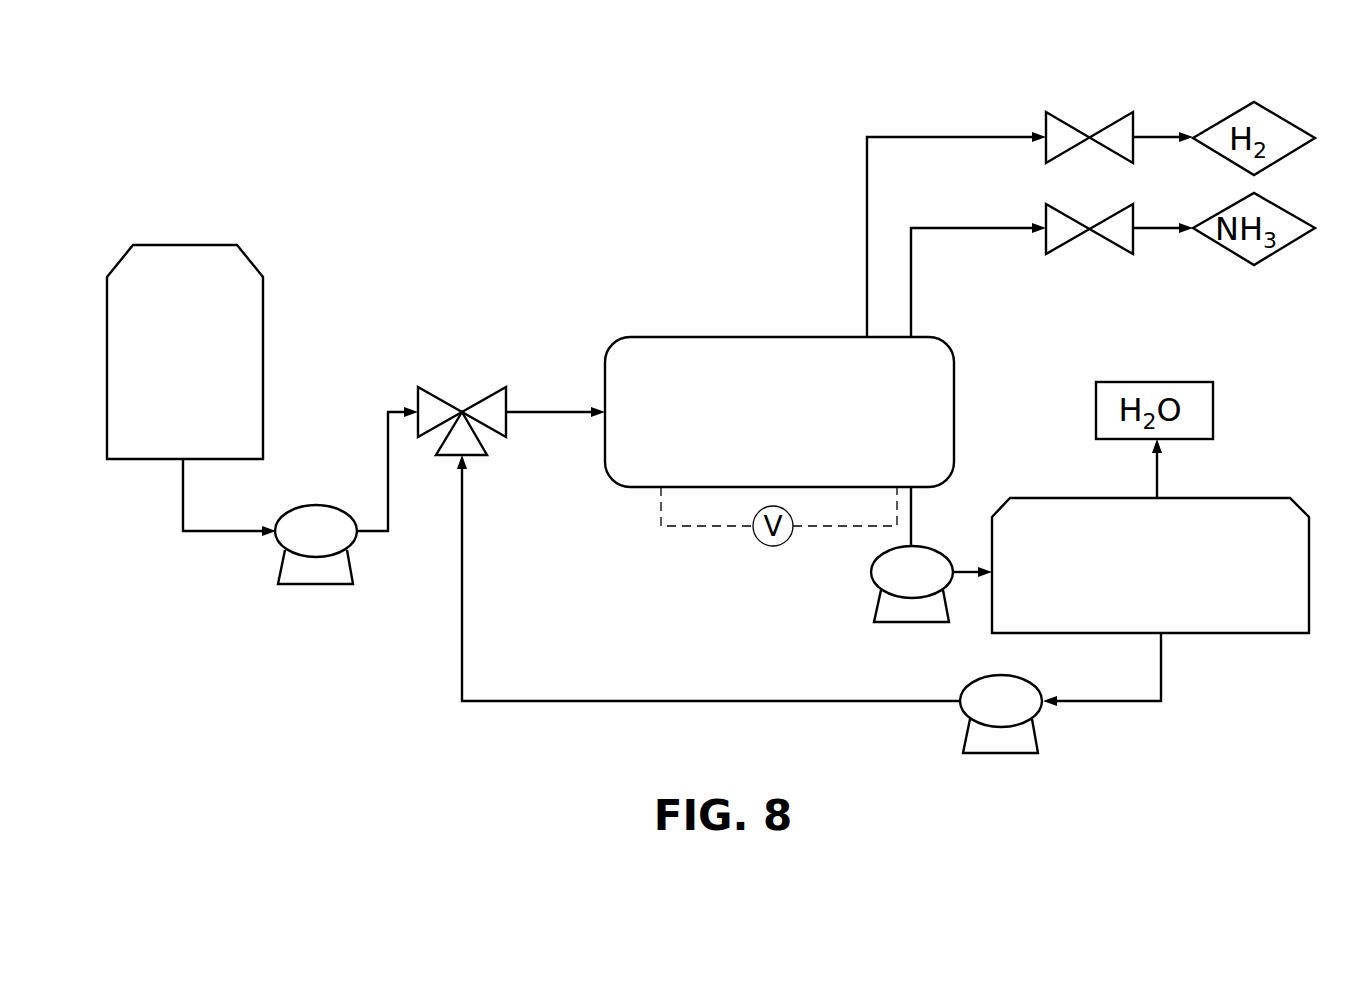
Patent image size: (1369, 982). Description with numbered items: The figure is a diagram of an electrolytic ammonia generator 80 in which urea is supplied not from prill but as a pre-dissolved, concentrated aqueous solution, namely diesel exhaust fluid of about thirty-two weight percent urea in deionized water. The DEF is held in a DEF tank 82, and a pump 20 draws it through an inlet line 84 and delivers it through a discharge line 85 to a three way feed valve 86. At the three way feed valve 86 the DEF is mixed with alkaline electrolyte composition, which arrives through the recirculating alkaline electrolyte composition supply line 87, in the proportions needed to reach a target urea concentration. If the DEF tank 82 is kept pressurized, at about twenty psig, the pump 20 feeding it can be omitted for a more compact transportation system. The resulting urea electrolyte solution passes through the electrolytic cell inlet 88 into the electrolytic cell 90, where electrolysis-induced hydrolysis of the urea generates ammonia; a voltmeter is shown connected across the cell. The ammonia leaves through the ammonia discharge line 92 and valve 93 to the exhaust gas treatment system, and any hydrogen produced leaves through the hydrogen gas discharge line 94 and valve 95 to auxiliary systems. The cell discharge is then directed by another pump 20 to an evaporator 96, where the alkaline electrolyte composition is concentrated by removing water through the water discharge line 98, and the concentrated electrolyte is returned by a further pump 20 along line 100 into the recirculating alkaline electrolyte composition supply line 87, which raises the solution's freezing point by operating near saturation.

The ammonia generator 80 is at (117, 115).
The DEF tank 82 is at (107, 318).
The inlet line 84 is at (183, 497).
The discharge line 85 is at (388, 464).
The three way feed valve 86 is at (440, 392).
The recirculating alkaline electrolyte composition supply line 87 is at (514, 701).
The electrolytic cell inlet 88 is at (531, 412).
The electrolytic cell 90 is at (716, 337).
The ammonia discharge line 92 is at (968, 228).
The valve 93 is at (1143, 190).
The hydrogen gas discharge line 94 is at (938, 137).
The valve 95 is at (1145, 99).
The evaporator 96 is at (1309, 585).
The water discharge line 98 is at (1160, 471).
The evaporator outlet line 100 is at (1112, 702).
The pump 20 is at (320, 584).